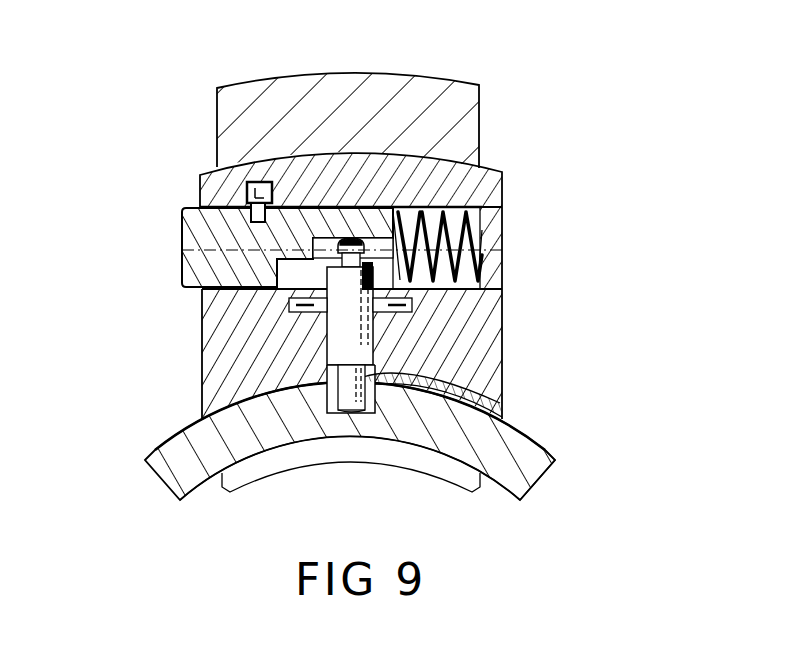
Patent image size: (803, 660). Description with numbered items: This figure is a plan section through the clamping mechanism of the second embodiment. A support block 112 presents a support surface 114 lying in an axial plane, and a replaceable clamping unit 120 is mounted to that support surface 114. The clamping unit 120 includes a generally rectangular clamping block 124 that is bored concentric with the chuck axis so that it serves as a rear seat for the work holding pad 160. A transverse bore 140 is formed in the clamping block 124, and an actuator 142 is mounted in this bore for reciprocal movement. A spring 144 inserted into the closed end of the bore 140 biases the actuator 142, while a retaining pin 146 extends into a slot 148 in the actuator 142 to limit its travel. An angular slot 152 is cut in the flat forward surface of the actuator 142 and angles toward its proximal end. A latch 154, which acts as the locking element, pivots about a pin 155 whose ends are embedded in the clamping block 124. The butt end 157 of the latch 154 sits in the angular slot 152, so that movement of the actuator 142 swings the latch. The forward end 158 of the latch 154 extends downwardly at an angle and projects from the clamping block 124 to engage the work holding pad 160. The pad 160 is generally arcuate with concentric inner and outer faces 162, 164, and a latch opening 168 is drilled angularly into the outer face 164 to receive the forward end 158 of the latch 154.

The support block 112 is at (403, 77).
The support surface 114 is at (257, 470).
The clamping unit 120 is at (502, 292).
The clamping block 124 is at (487, 342).
The transverse bore 140 is at (470, 250).
The actuator 142 is at (222, 253).
The spring 144 is at (500, 243).
The retaining pin 146 is at (247, 190).
The slot 148 is at (240, 205).
The angular slot 152 is at (330, 238).
The latch 154 is at (342, 328).
The pin 155 is at (290, 305).
The butt end 157 is at (352, 237).
The forward end 158 is at (350, 381).
The work holding pad 160 is at (162, 474).
The inner face 162 is at (507, 490).
The outer face 164 is at (550, 447).
The latch opening 168 is at (345, 413).